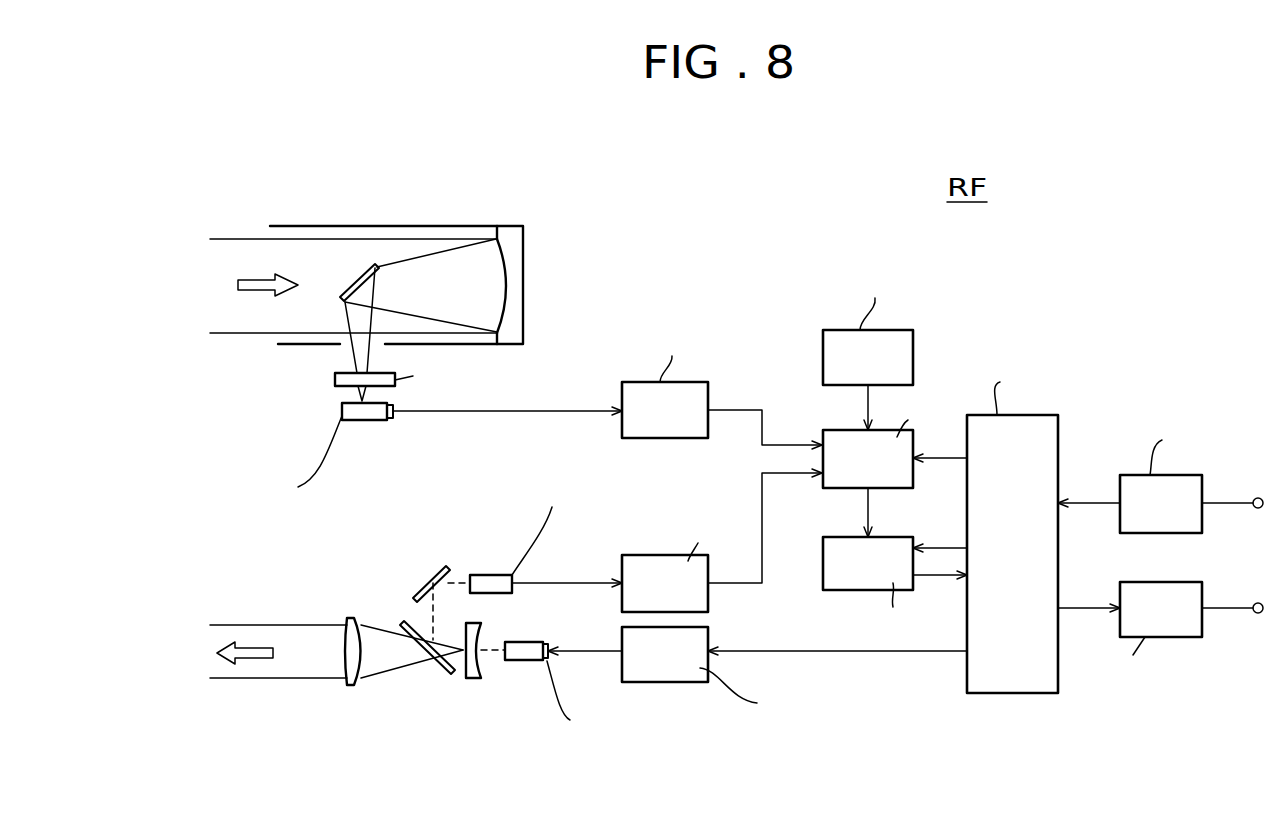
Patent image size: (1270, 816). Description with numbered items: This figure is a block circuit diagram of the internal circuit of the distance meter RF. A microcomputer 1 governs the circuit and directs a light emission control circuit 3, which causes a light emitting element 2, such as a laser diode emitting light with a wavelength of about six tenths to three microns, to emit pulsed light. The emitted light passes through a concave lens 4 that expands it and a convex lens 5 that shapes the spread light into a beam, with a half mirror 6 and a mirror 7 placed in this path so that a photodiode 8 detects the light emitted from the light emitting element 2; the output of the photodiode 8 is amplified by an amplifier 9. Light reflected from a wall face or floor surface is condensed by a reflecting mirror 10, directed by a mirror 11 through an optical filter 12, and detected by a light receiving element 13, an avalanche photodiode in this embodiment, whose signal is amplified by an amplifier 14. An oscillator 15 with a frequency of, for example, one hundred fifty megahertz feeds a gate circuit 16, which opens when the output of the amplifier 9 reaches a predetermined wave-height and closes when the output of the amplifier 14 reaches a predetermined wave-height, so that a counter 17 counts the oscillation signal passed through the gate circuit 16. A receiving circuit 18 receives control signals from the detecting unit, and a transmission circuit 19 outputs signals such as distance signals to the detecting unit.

The microcomputer 1 is at (1058, 435).
The light emitting element 2 is at (531, 661).
The light emission control circuit 3 is at (708, 635).
The concave lens 4 is at (473, 680).
The convex lens 5 is at (353, 686).
The half mirror 6 is at (440, 673).
The mirror 7 is at (430, 573).
The photodiode 8 is at (490, 575).
The amplifier 9 is at (708, 600).
The reflecting mirror 10 is at (523, 297).
The mirror 11 is at (357, 278).
The optical filter 12 is at (335, 381).
The light receiving element 13 is at (374, 422).
The amplifier 14 is at (708, 398).
The oscillator 15 is at (913, 352).
The gate circuit 16 is at (895, 478).
The counter 17 is at (830, 567).
The receiving circuit 18 is at (1202, 527).
The transmission circuit 19 is at (1158, 582).